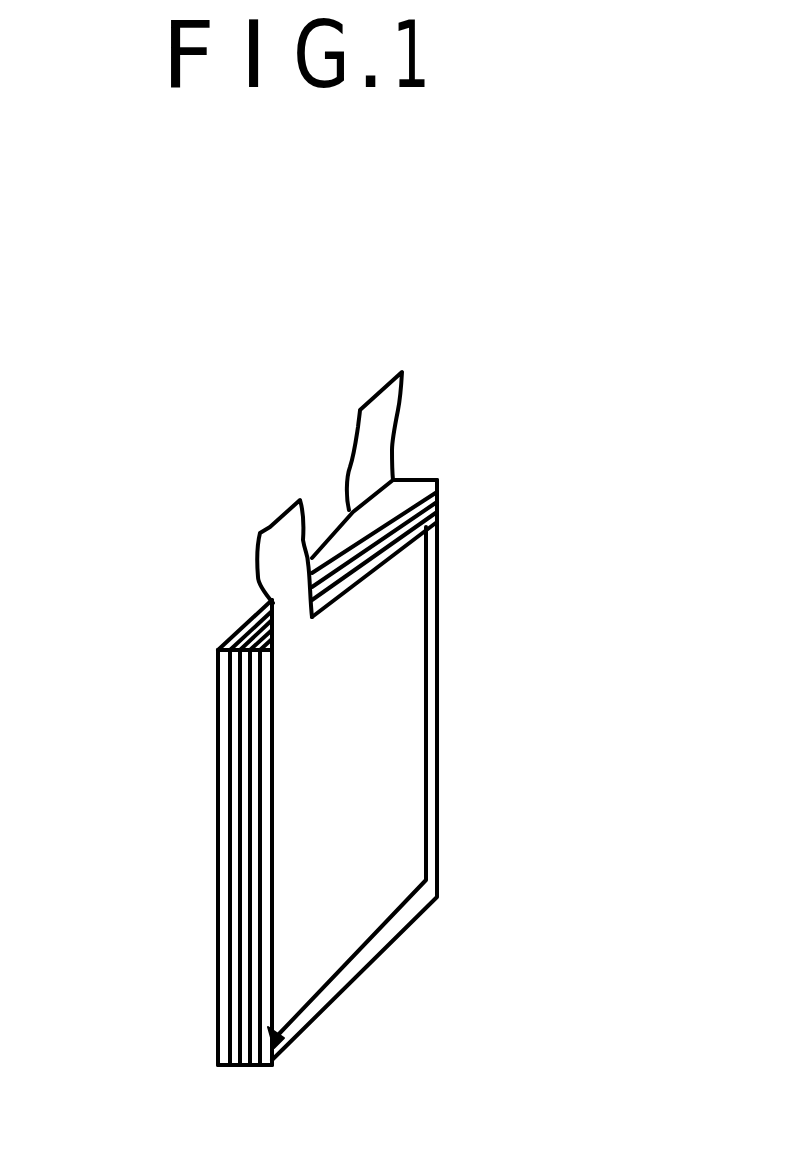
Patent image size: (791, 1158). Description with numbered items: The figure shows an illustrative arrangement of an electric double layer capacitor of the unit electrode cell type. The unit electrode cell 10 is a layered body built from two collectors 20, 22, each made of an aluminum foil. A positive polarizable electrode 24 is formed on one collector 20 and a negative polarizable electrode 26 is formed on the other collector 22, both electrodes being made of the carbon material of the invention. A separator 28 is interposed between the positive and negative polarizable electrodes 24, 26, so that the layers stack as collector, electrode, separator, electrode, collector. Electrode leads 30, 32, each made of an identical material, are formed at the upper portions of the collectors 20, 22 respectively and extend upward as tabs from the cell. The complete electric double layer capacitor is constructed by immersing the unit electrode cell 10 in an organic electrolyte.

The unit electrode cell 10 is at (483, 412).
The collector 20 is at (218, 703).
The collector 22 is at (400, 808).
The positive polarizable electrode 24 is at (220, 1020).
The negative polarizable electrode 26 is at (284, 1040).
The separator 28 is at (245, 947).
The electrode lead 30 is at (375, 415).
The electrode lead 32 is at (278, 538).